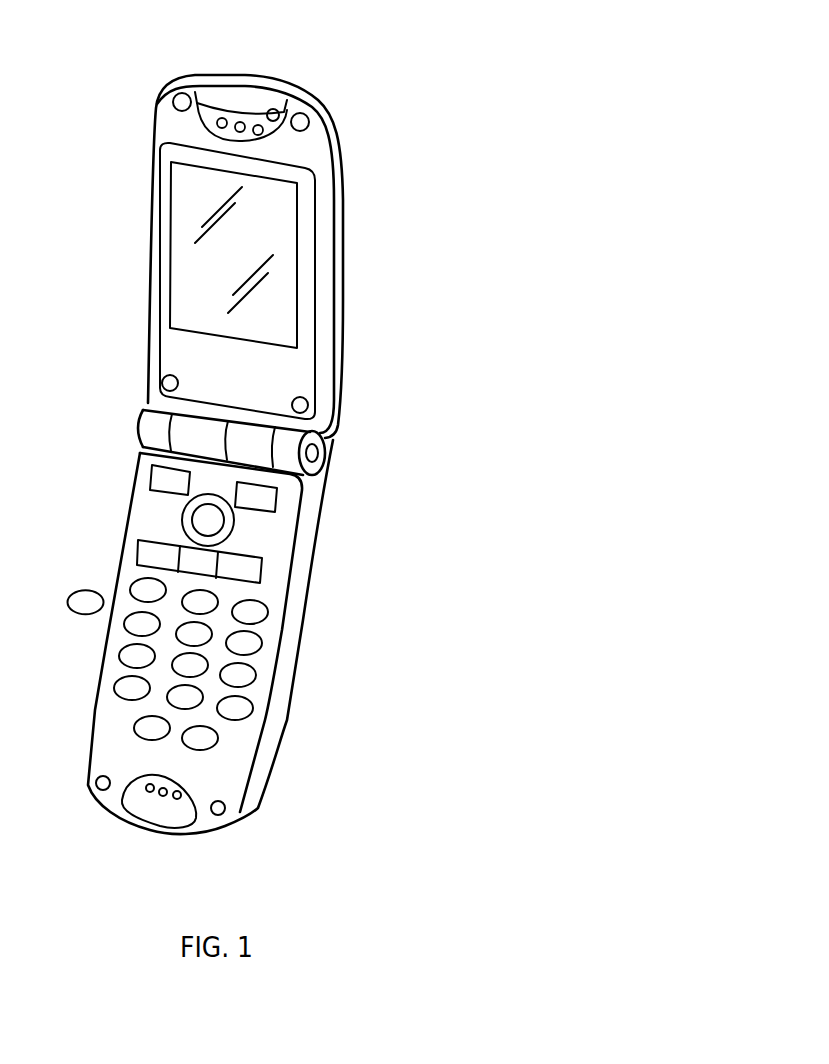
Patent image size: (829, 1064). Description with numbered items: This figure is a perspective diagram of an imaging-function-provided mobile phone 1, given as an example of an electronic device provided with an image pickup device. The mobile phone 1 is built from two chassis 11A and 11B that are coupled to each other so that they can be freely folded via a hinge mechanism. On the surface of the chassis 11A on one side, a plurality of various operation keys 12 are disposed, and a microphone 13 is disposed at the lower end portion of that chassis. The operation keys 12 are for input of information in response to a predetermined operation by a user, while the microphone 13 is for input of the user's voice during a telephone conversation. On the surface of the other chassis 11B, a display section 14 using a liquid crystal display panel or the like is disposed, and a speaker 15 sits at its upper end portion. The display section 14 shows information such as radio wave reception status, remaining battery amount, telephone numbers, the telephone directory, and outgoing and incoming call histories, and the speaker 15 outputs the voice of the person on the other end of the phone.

The mobile phone 1 is at (458, 78).
The chassis 11A is at (292, 650).
The chassis 11B is at (328, 290).
The operation keys 12 is at (157, 473).
The microphone 13 is at (158, 797).
The display section 14 is at (178, 263).
The speaker 15 is at (248, 120).